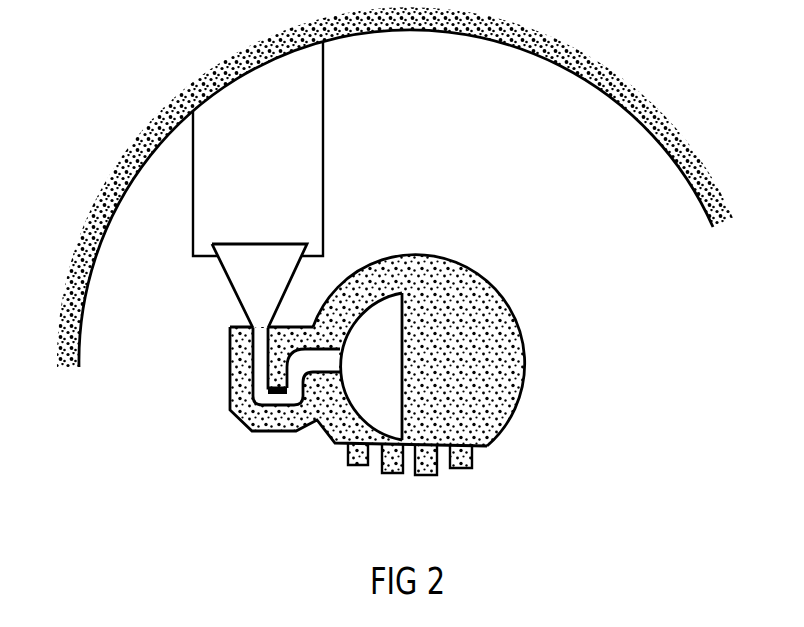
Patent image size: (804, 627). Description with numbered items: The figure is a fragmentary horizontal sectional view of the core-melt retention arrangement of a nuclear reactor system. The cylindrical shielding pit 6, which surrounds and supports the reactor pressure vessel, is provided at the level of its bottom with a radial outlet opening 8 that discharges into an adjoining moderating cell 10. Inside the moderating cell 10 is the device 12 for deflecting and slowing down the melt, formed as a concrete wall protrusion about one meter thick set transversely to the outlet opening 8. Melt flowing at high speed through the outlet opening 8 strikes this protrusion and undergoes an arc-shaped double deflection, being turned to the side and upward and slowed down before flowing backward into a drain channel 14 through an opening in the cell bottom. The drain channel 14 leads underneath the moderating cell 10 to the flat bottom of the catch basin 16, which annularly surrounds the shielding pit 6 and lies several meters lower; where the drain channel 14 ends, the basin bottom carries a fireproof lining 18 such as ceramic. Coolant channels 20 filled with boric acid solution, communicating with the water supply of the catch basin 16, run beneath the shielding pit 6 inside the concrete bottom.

The shielding pit 6 is at (378, 312).
The outlet opening 8 is at (320, 362).
The moderating cell 10 is at (273, 400).
The device for deflecting and slowing down the melt 12 is at (268, 369).
The drain channel 14 is at (243, 284).
The catch basin 16 is at (482, 148).
The fireproof lining 18 is at (306, 122).
The coolant channels 20 is at (370, 462).